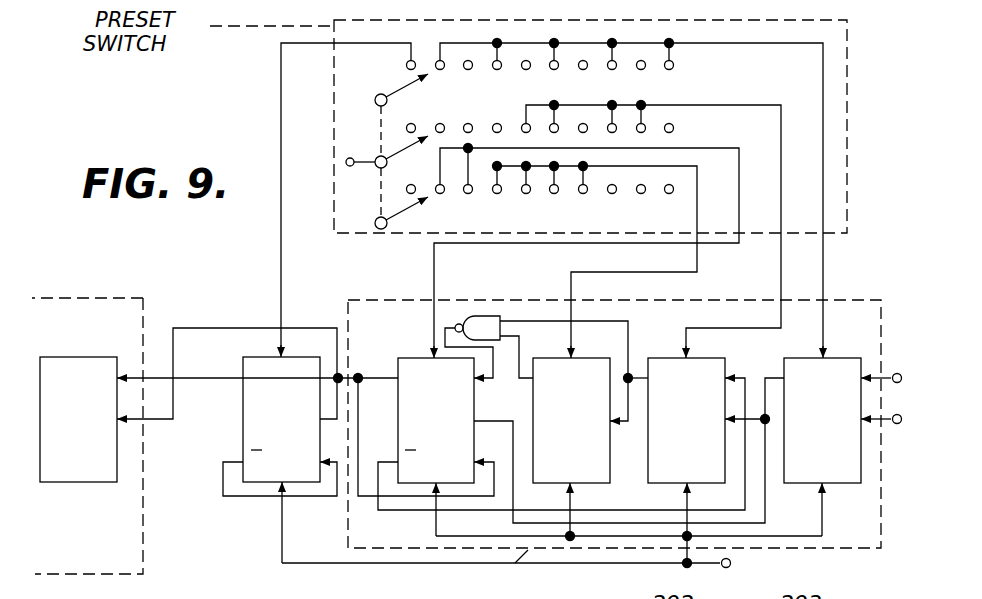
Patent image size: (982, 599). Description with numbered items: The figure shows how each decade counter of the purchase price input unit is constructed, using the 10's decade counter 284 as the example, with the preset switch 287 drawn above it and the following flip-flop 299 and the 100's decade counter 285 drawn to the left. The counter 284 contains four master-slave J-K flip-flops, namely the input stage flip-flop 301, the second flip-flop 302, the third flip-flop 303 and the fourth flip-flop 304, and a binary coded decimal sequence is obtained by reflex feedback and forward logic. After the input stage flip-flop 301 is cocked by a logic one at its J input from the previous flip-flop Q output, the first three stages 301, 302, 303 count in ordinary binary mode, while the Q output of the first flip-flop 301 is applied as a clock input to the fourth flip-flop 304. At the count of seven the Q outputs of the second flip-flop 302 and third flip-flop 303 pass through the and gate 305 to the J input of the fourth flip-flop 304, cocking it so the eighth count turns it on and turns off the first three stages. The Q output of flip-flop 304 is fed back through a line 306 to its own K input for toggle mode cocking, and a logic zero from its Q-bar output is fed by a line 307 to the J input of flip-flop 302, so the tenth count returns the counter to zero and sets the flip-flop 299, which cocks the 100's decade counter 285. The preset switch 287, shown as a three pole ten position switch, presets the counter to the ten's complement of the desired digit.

The 10's decade counter 284 is at (870, 283).
The 100's decade counter 285 is at (78, 297).
The preset switch 287 is at (333, 107).
The flip-flop 299 is at (243, 407).
The input stage flip-flop 301 is at (838, 358).
The second flip-flop 302 is at (700, 358).
The third flip-flop 303 is at (583, 358).
The fourth flip-flop 304 is at (418, 343).
The and gate 305 is at (482, 316).
The line 306 is at (370, 496).
The line 307 is at (458, 510).